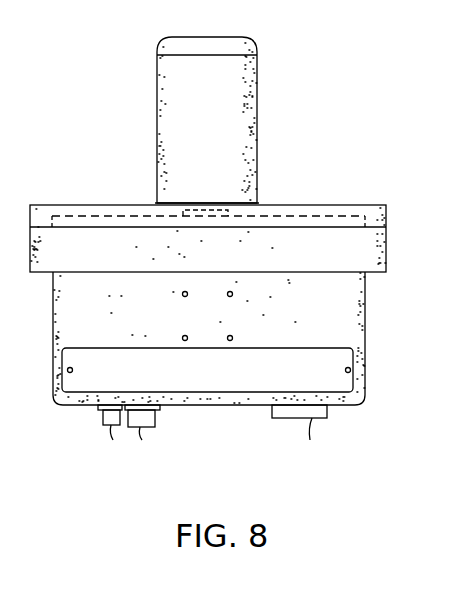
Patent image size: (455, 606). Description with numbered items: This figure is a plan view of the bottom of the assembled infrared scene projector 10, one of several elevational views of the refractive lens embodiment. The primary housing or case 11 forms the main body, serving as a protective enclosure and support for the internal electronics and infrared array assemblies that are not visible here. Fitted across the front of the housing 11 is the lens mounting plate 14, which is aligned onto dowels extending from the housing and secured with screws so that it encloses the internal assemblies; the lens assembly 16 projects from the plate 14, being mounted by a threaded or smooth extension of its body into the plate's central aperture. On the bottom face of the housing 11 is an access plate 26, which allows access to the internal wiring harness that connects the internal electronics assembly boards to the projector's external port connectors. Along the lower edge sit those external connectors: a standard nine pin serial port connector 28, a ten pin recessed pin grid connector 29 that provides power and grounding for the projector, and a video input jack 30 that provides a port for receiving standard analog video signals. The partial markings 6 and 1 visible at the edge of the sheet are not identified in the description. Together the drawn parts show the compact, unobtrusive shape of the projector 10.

The infrared scene projector 10 is at (92, 149).
The lens assembly 16 is at (268, 106).
The lens mounting plate 14 is at (366, 200).
The primary housing 11 is at (372, 307).
The access plate 26 is at (353, 357).
The RS-232 9 pin serial port connector 28 is at (310, 440).
The 10 pin recessed pin grid connector 29 is at (142, 440).
The video input jack 30 is at (113, 440).
The partial numeral 6 is at (8, 155).
The partial numeral 1 is at (7, 350).